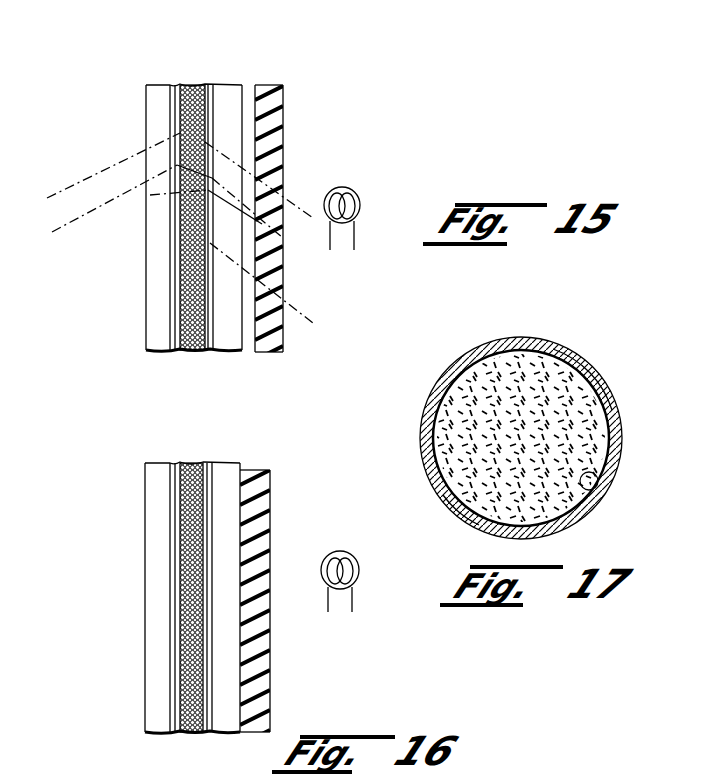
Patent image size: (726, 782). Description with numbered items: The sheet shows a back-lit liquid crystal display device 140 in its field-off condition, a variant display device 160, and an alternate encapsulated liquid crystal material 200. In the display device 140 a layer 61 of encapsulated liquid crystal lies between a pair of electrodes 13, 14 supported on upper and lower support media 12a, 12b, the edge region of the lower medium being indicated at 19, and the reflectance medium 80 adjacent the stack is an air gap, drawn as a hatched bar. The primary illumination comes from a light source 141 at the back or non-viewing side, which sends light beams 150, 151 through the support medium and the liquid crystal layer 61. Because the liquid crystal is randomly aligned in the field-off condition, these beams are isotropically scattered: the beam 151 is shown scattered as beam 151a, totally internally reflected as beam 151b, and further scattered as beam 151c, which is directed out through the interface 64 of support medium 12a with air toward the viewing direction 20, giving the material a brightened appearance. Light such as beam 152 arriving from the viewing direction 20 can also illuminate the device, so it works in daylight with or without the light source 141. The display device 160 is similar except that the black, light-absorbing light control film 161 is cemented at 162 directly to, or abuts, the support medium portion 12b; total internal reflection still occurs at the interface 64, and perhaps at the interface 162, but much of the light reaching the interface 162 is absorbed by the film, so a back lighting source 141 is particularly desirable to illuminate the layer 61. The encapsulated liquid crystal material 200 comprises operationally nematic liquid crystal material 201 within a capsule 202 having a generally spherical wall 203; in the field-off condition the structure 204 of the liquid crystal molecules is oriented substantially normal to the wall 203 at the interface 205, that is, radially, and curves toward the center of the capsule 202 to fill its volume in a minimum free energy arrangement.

In FIG. 15, the upper support medium 12a is at (157, 84).
In FIG. 16, the upper support medium 12a is at (147, 487).
In FIG. 15, the lower support medium 12b is at (222, 86).
In FIG. 16, the lower support medium 12b is at (228, 468).
In FIG. 15, the electrode 13 is at (209, 84).
In FIG. 16, the electrode 13 is at (205, 462).
In FIG. 15, the electrode 14 is at (170, 84).
In FIG. 16, the electrode 14 is at (178, 462).
In FIG. 15, the plate edge 19 is at (245, 352).
In FIG. 15, the viewing direction 20 is at (155, 217).
In FIG. 16, the viewing direction 20 is at (158, 597).
In FIG. 15, the layer of encapsulated liquid crystal 61 is at (186, 72).
In FIG. 16, the layer of encapsulated liquid crystal 61 is at (187, 455).
In FIG. 15, the interface 64 is at (146, 328).
In FIG. 15, the reflectance medium 80 is at (250, 84).
In FIG. 15, the liquid crystal display device 140 is at (300, 86).
In FIG. 15, the light source 141 is at (360, 208).
In FIG. 16, the light source 141 is at (348, 553).
In FIG. 15, the light beam 150 is at (113, 164).
In FIG. 15, the light beam 151 is at (292, 303).
In FIG. 15, the isotropically scattered beam 151a is at (283, 238).
In FIG. 15, the totally internally reflected beam 151b is at (150, 178).
In FIG. 15, the further scattered beam 151c is at (157, 196).
In FIG. 15, the light beam 152 is at (50, 213).
In FIG. 16, the light beam 152 is at (134, 612).
In FIG. 16, the display device 160 is at (283, 473).
In FIG. 16, the light control film 161 is at (263, 722).
In FIG. 16, the cemented interface 162 is at (240, 735).
In FIG. 17, the encapsulated liquid crystal material 200 is at (634, 405).
In FIG. 17, the operationally nematic liquid crystal material 201 is at (560, 372).
In FIG. 17, the capsule 202 is at (598, 372).
In FIG. 17, the spherical wall 203 is at (612, 447).
In FIG. 17, the structure of the liquid crystal molecules 204 is at (600, 474).
In FIG. 17, the interface 205 is at (582, 490).